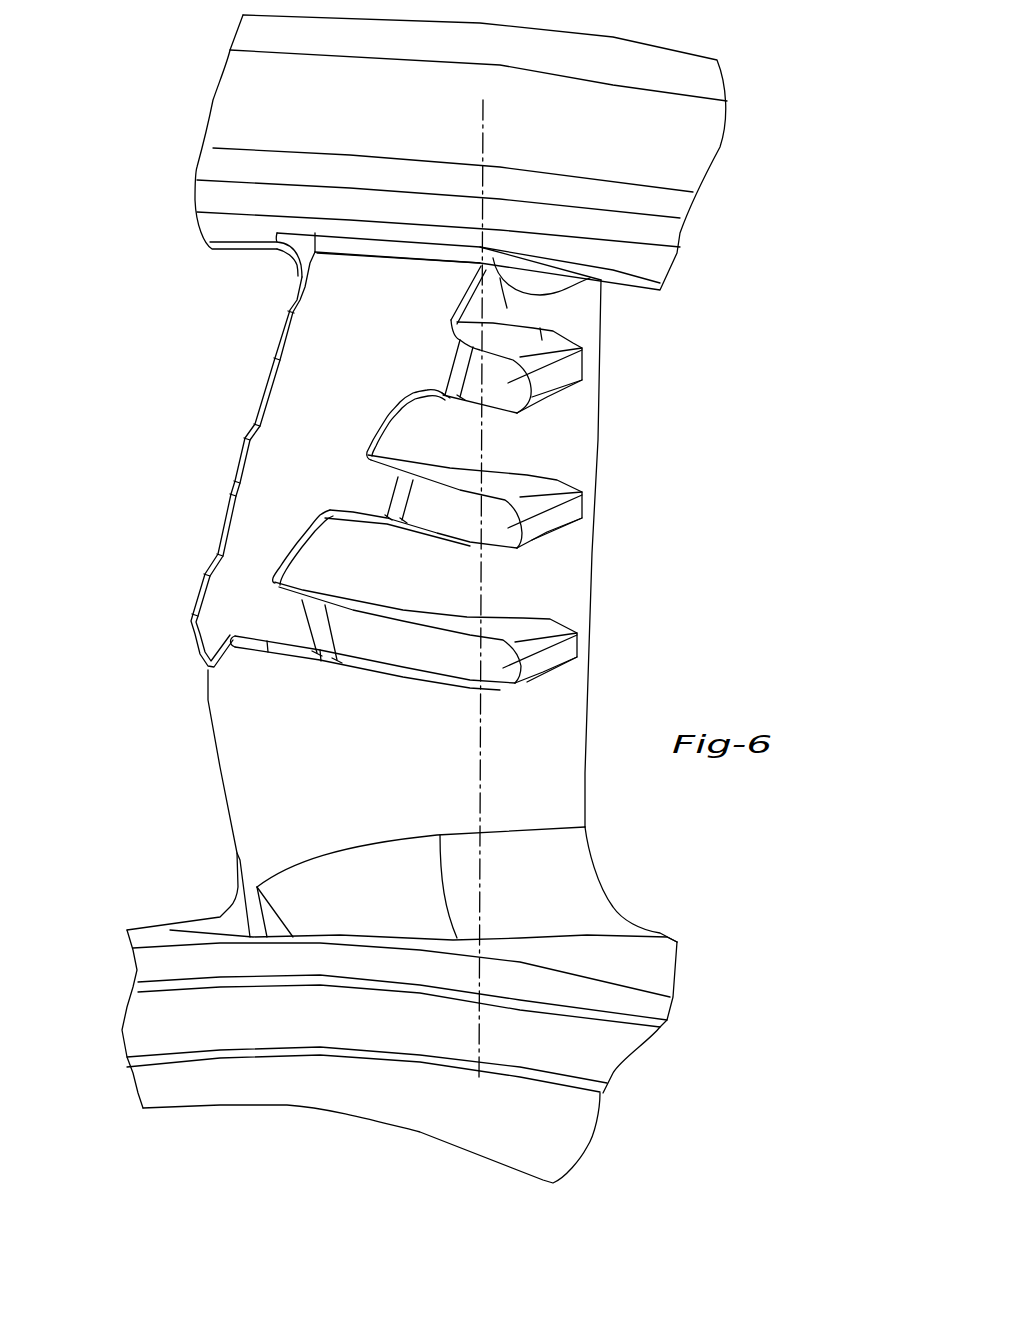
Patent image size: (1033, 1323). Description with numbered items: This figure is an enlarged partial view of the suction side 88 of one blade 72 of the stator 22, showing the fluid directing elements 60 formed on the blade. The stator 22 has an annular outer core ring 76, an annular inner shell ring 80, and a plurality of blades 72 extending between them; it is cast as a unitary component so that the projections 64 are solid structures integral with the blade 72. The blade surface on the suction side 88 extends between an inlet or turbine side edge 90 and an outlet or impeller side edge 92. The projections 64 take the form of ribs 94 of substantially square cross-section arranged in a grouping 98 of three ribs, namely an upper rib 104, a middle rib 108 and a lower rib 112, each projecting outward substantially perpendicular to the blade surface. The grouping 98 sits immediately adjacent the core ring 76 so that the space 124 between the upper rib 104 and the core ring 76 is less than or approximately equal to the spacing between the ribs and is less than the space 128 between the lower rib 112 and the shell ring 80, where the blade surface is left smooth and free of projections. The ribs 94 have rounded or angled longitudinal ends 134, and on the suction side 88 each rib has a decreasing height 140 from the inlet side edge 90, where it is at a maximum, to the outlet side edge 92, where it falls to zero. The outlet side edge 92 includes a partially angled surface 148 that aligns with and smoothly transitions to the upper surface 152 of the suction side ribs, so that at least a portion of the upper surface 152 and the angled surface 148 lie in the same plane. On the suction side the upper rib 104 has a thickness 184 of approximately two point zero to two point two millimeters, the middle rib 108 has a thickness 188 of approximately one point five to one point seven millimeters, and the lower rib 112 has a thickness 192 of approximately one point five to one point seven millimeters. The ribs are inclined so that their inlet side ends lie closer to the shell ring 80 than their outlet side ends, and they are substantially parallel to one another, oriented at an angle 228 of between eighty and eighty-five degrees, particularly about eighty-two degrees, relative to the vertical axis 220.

The stator 22 is at (722, 34).
The vertical axis 220 is at (483, 128).
The annular outer core ring 76 is at (340, 210).
The space 124 is at (500, 280).
The partially angled surface 148 is at (340, 306).
The fluid directing elements 60 is at (615, 345).
The thickness 184 is at (468, 348).
The upper rib 104 is at (582, 382).
The angle 228 is at (487, 420).
The grouping 98 is at (225, 420).
The thickness 188 is at (408, 523).
The projections 64 is at (615, 487).
The longitudinal ends 134 is at (595, 503).
The inlet or turbine side edge 90 is at (595, 523).
The middle rib 108 is at (578, 528).
The outlet or impeller side edge 92 is at (240, 558).
The decreasing height 140 is at (395, 628).
The ribs 94 is at (615, 617).
The thickness 192 is at (300, 607).
The upper surface 152 is at (365, 625).
The lower rib 112 is at (577, 667).
The blades 72 is at (210, 772).
The suction side 88 is at (287, 826).
The space 128 is at (530, 783).
The annular inner shell ring 80 is at (327, 977).